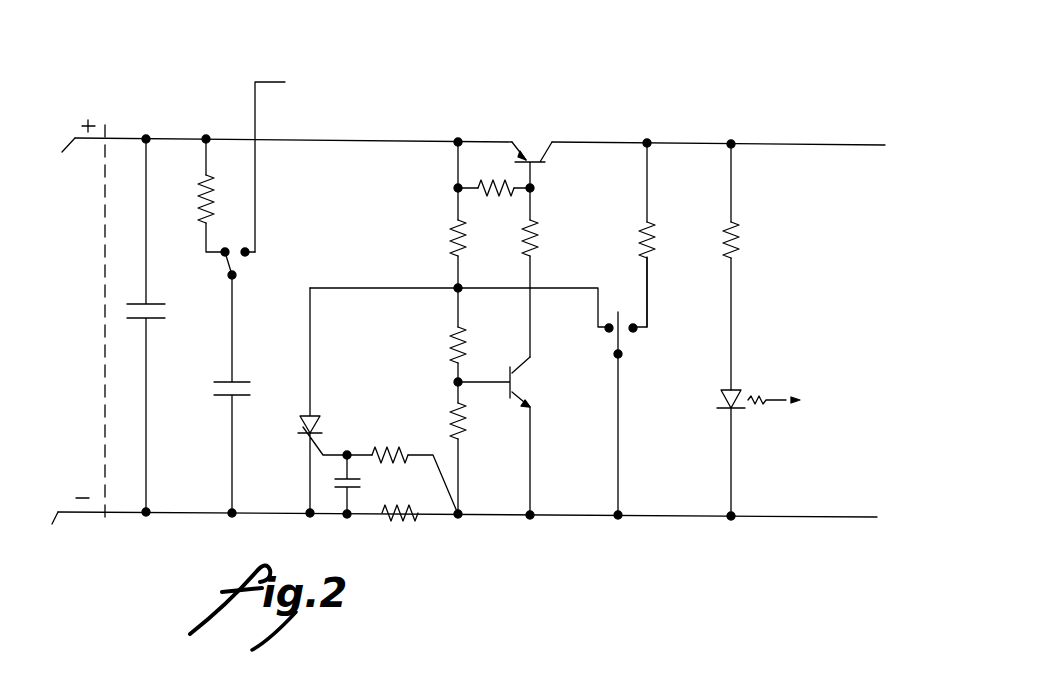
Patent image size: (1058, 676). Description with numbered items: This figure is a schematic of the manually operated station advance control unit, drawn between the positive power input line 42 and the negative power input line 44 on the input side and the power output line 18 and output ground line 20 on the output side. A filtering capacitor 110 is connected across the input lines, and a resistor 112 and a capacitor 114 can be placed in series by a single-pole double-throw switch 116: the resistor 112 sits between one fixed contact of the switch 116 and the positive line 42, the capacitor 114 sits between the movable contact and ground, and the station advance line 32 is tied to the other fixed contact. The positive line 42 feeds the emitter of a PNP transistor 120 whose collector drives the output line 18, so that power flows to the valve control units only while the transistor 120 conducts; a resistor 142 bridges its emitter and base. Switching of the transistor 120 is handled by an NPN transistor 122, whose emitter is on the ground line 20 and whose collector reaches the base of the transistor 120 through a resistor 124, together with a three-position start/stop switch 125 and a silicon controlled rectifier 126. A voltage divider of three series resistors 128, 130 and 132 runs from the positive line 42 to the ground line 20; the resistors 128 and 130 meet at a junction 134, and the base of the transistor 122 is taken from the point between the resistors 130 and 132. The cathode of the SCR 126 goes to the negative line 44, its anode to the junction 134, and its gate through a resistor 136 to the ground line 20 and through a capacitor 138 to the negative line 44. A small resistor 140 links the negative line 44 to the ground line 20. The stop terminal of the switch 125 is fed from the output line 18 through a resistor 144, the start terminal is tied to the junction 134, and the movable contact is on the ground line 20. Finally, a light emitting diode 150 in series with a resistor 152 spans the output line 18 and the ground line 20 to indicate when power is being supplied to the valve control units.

The power output line 18 is at (782, 143).
The output ground line 20 is at (770, 518).
The station advance input 32 is at (285, 82).
The positive power input line 42 is at (75, 138).
The negative power input line 44 is at (60, 512).
The capacitor 110 is at (157, 297).
The resistor 112 is at (203, 196).
The capacitor 114 is at (240, 378).
The single-pole double-throw switch 116 is at (255, 266).
The PNP transistor 120 is at (536, 138).
The NPN transistor 122 is at (538, 398).
The resistor 124 is at (536, 250).
The start/stop switch 125 is at (639, 359).
The silicon controlled rectifier 126 is at (324, 418).
The resistor 128 is at (464, 235).
The resistor 130 is at (464, 345).
The resistor 132 is at (463, 437).
The junction 134 is at (460, 290).
The resistor 136 is at (405, 449).
The capacitor 138 is at (341, 491).
The resistor 140 is at (425, 516).
The resistor 142 is at (502, 196).
The resistor 144 is at (652, 255).
The light emitting diode 150 is at (745, 386).
The resistor 152 is at (738, 225).